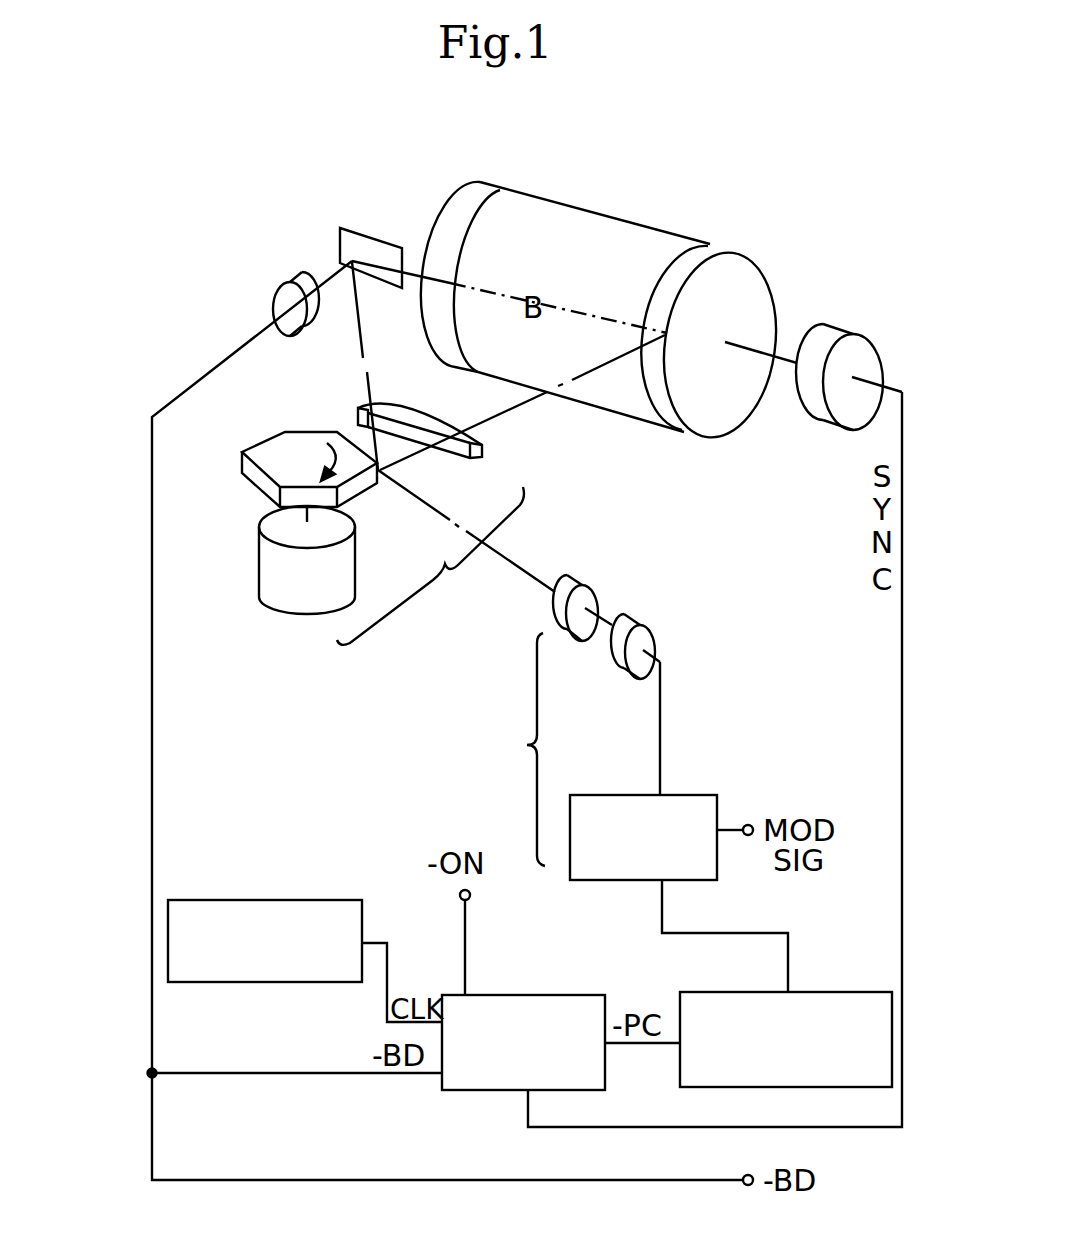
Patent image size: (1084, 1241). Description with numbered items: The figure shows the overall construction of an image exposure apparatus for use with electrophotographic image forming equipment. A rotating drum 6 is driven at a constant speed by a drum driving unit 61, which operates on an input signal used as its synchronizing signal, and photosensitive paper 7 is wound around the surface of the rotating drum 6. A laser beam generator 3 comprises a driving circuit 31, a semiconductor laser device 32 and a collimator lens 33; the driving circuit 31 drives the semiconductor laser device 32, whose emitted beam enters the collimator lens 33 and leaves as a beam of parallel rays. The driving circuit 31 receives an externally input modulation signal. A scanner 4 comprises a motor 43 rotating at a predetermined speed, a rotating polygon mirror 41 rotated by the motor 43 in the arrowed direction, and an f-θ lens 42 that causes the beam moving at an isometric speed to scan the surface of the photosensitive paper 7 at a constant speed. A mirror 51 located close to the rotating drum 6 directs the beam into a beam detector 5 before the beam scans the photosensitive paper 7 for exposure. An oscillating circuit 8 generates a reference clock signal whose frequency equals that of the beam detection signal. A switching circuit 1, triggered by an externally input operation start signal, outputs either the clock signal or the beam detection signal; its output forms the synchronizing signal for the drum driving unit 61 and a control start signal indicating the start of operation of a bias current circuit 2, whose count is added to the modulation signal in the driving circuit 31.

The switching circuit 1 is at (499, 995).
The bias current circuit 2 is at (842, 992).
The laser beam generator 3 is at (517, 749).
The driving circuit 31 is at (702, 795).
The semiconductor laser device 32 is at (650, 637).
The collimator lens 33 is at (587, 592).
The scanner 4 is at (430, 566).
The rotating polygon mirror 41 is at (287, 447).
The f-θ lens 42 is at (365, 408).
The motor 43 is at (266, 576).
The beam detector 5 is at (286, 277).
The mirror 51 is at (372, 236).
The rotating drum 6 is at (748, 288).
The drum driving unit 61 is at (833, 337).
The photosensitive paper 7 is at (628, 234).
The oscillating circuit 8 is at (352, 900).